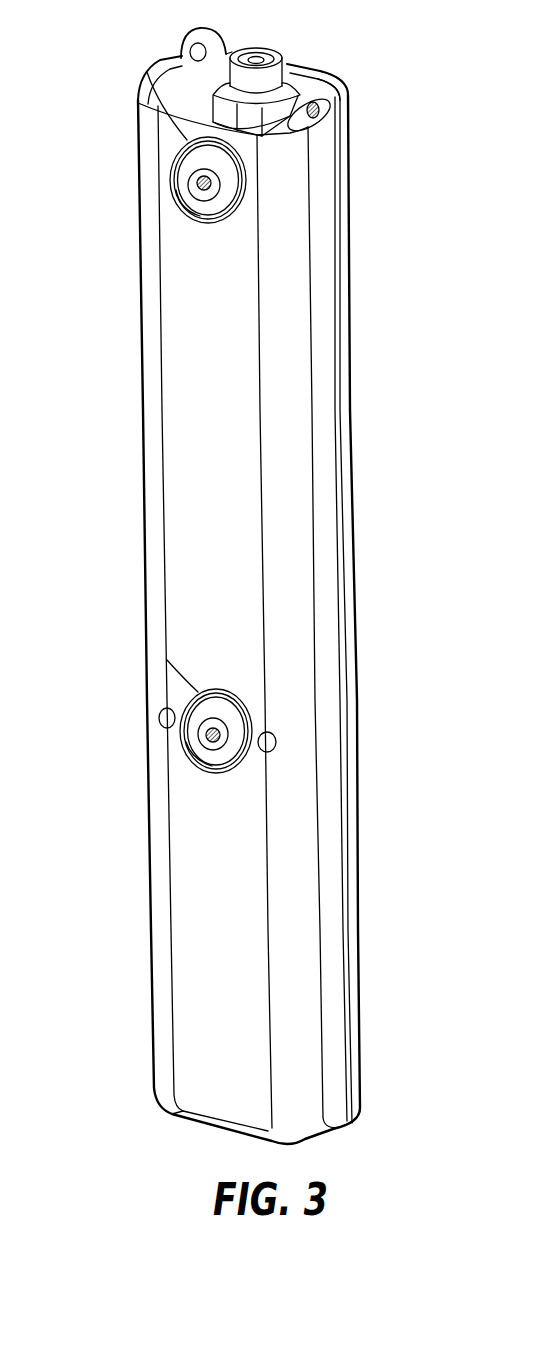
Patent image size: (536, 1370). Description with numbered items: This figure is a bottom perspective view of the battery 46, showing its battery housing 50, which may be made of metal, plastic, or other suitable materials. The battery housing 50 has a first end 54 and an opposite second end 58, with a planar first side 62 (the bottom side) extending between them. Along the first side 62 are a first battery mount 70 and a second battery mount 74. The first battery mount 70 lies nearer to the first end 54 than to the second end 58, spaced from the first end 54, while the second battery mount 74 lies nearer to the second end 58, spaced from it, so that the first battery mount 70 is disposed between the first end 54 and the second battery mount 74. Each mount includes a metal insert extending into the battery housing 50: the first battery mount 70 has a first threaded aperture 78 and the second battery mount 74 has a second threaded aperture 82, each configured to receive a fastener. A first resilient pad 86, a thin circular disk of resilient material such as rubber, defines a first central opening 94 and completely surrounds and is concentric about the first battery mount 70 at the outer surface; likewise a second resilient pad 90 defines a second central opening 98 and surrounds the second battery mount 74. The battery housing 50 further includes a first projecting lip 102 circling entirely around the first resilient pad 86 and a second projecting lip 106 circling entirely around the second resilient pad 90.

The battery 46 is at (108, 127).
The battery housing 50 is at (285, 315).
The first end 54 is at (340, 93).
The second end 58 is at (330, 1112).
The first side 62 is at (220, 490).
The first battery mount 70 is at (196, 199).
The second battery mount 74 is at (205, 748).
The first threaded aperture 78 is at (198, 185).
The second threaded aperture 82 is at (206, 736).
The first resilient pad 86 is at (242, 162).
The second resilient pad 90 is at (232, 710).
The first central opening 94 is at (204, 212).
The second central opening 98 is at (214, 755).
The first projecting lip 102 is at (186, 140).
The second projecting lip 106 is at (198, 690).